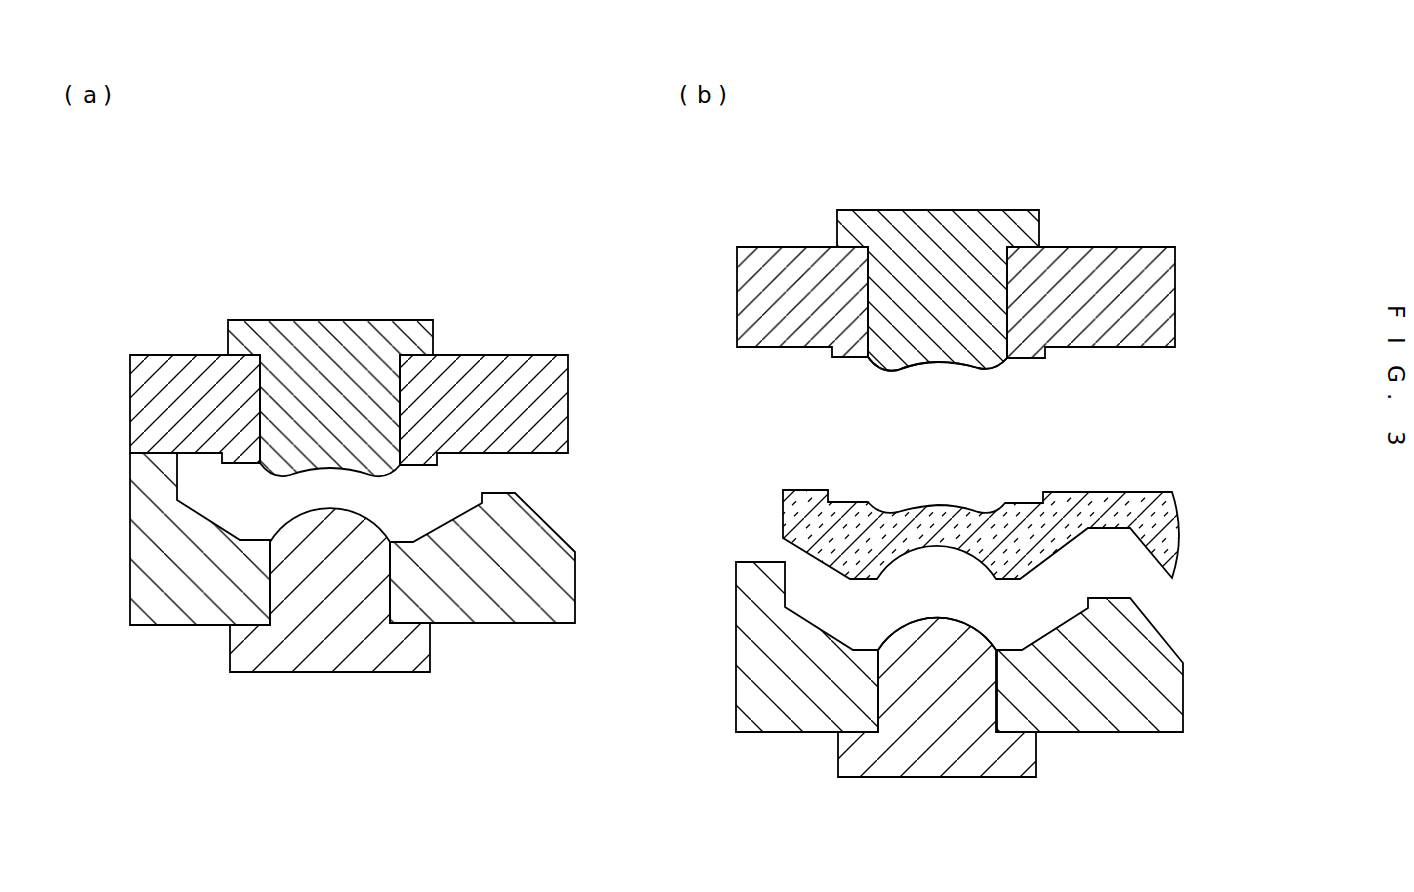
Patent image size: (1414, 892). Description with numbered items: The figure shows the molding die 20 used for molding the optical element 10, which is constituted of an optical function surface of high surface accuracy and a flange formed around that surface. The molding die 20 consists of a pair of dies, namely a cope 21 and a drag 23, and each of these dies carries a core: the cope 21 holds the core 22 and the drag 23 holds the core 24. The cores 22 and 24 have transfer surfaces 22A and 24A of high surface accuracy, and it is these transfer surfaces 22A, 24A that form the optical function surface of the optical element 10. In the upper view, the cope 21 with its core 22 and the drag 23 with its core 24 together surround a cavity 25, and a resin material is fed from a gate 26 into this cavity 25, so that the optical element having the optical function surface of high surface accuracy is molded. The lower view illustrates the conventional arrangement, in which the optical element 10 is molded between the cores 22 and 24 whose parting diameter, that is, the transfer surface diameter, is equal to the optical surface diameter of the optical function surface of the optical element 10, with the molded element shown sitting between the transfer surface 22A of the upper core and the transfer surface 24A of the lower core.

The optical element 10 is at (1143, 500).
The molding die 20 is at (237, 258).
The cope 21 is at (190, 367).
The core 22 is at (397, 328).
The transfer surface 22A is at (957, 367).
The drag 23 is at (193, 597).
The core 24 is at (393, 648).
The transfer surface 24A is at (985, 632).
The cavity 25 is at (228, 511).
The gate 26 is at (567, 483).